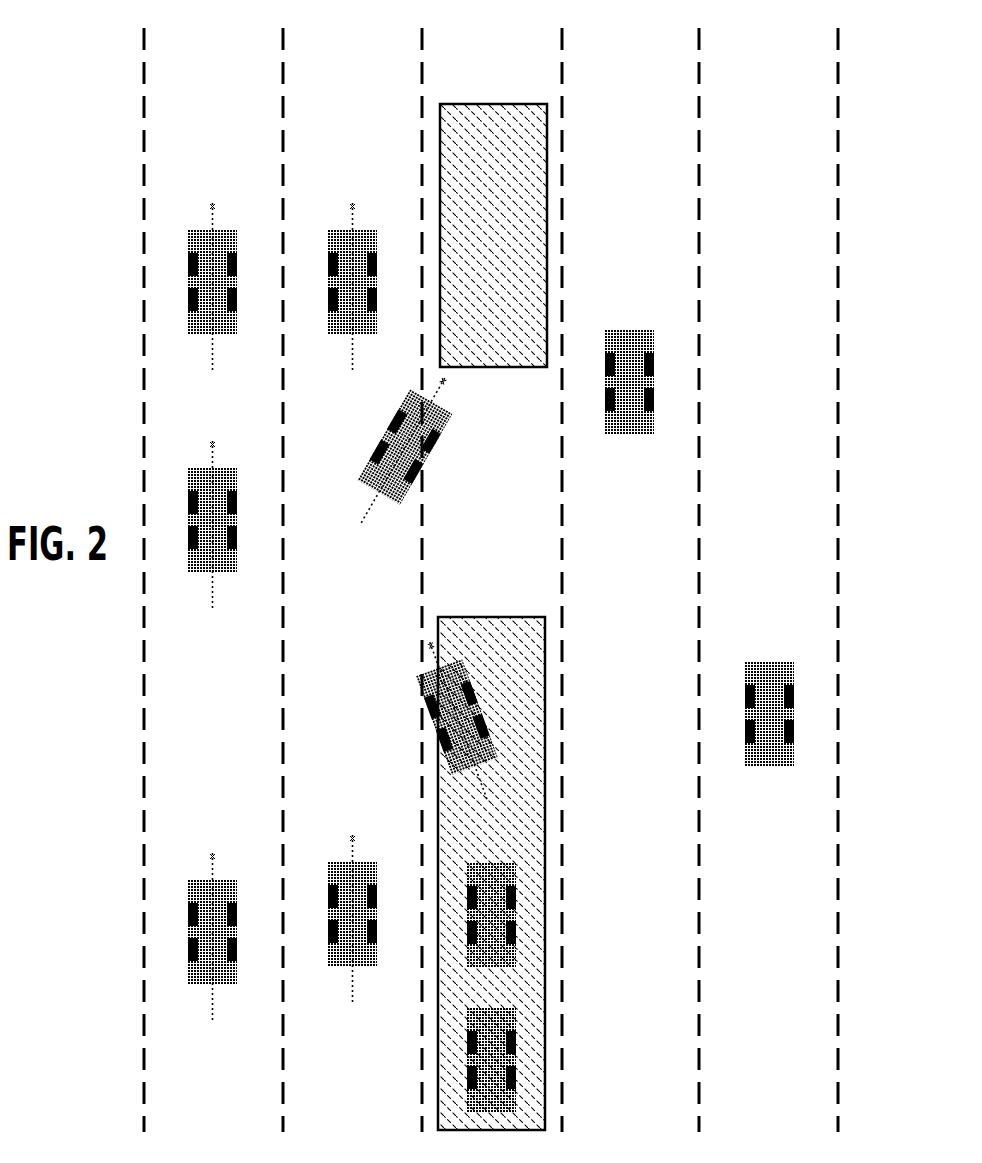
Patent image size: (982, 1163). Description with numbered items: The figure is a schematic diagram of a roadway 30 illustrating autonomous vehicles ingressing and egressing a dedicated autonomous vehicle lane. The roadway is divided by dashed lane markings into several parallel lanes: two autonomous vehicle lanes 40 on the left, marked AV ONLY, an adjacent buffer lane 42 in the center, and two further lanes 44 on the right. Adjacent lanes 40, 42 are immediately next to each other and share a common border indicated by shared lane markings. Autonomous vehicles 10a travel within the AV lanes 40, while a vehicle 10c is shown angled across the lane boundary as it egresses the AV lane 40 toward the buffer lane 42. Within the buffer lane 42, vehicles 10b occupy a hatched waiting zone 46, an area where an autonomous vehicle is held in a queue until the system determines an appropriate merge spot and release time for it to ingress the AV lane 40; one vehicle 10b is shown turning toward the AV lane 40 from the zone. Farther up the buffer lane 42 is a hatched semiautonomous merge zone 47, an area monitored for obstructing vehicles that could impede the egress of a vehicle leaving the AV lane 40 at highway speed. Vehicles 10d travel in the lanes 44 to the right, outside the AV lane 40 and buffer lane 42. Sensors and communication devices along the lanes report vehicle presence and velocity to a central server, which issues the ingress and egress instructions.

The roadway / traffic environment 30 is at (64, 26).
The autonomous vehicle lane 40 is at (229, 79).
The buffer lane 42 is at (504, 79).
The lane 44 is at (642, 79).
The waiting zone 46 is at (484, 617).
The semiautonomous merge zone 47 is at (546, 207).
The autonomous vehicle in the AV lane 10a is at (229, 230).
The autonomous vehicle in the buffer lane 10b is at (478, 687).
The egressing autonomous vehicle 10c is at (430, 455).
The vehicle traveling in the lane 10d is at (645, 330).